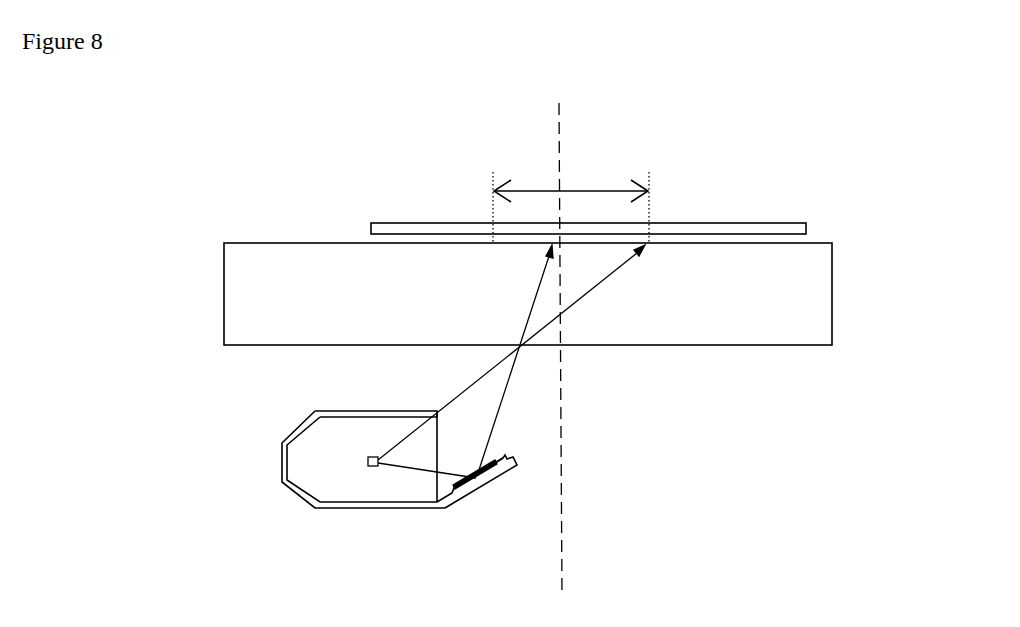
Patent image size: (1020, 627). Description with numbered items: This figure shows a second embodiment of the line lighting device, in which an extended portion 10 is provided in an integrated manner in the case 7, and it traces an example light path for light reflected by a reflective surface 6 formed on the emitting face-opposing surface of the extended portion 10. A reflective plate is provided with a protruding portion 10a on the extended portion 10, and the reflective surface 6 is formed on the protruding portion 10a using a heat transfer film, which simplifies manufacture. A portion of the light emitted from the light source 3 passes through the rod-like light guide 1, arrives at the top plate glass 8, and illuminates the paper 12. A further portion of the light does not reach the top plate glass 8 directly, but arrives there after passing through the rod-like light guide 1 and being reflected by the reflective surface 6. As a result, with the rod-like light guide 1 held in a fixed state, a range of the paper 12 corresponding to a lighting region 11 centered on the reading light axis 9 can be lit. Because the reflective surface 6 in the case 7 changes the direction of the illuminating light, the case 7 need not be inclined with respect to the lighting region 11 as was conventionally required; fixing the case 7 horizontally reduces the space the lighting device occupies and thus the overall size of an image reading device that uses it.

The rod-like light guide 1 is at (295, 468).
The light source 3 is at (372, 467).
The reflective surface 6 is at (479, 474).
The case 7 is at (299, 430).
The top plate glass 8 is at (308, 258).
The reading light axis 9 is at (562, 571).
The extended portion 10 is at (464, 497).
The protruding portion 10a is at (496, 474).
The lighting region 11 is at (577, 190).
The paper 12 is at (760, 228).